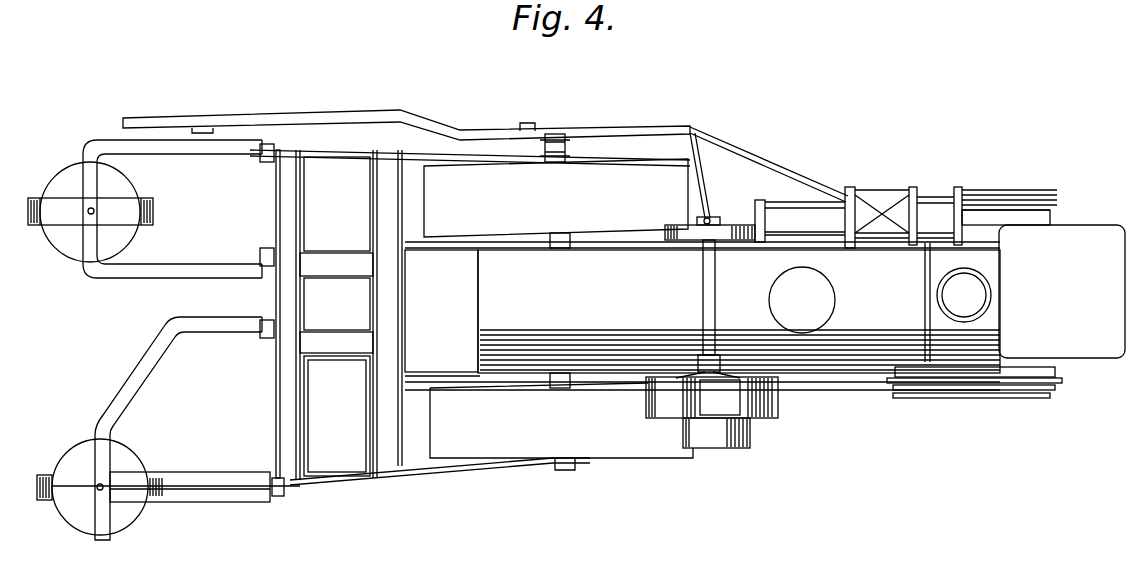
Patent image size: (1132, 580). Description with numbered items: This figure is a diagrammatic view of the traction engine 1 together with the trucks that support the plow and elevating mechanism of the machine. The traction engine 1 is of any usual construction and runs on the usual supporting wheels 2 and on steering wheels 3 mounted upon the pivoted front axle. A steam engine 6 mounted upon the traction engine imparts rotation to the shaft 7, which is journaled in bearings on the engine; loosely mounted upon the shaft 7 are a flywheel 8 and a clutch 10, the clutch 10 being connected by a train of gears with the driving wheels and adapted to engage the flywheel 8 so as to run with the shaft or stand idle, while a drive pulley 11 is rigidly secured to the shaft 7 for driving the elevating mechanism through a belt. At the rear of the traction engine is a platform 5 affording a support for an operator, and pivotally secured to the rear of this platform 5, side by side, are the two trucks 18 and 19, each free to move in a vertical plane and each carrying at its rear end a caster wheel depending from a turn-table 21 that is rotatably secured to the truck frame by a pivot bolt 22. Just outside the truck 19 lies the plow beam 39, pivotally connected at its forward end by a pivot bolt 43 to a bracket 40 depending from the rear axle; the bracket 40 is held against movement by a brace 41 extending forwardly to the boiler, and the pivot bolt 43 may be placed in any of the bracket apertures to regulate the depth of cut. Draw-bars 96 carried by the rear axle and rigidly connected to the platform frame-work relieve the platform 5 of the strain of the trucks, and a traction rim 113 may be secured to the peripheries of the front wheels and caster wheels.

The traction engine 1 is at (702, 311).
The supporting wheels 2 is at (558, 308).
The steering wheels 3 is at (1037, 218).
The platform 5 is at (398, 462).
The steam engine 6 is at (883, 200).
The shaft 7 is at (715, 296).
The flywheel 8 is at (770, 416).
The clutch 10 is at (718, 376).
The drive pulley 11 is at (720, 449).
The truck 18 is at (238, 492).
The truck 19 is at (208, 272).
The turn-table 21 is at (80, 174).
The pivot bolt 22 is at (87, 211).
The plow beam 39 is at (307, 121).
The bracket 40 is at (554, 133).
The brace 41 is at (789, 183).
The pivot bolt 43 is at (527, 123).
The draw-bar 96 is at (431, 150).
The traction rim 113 is at (982, 193).